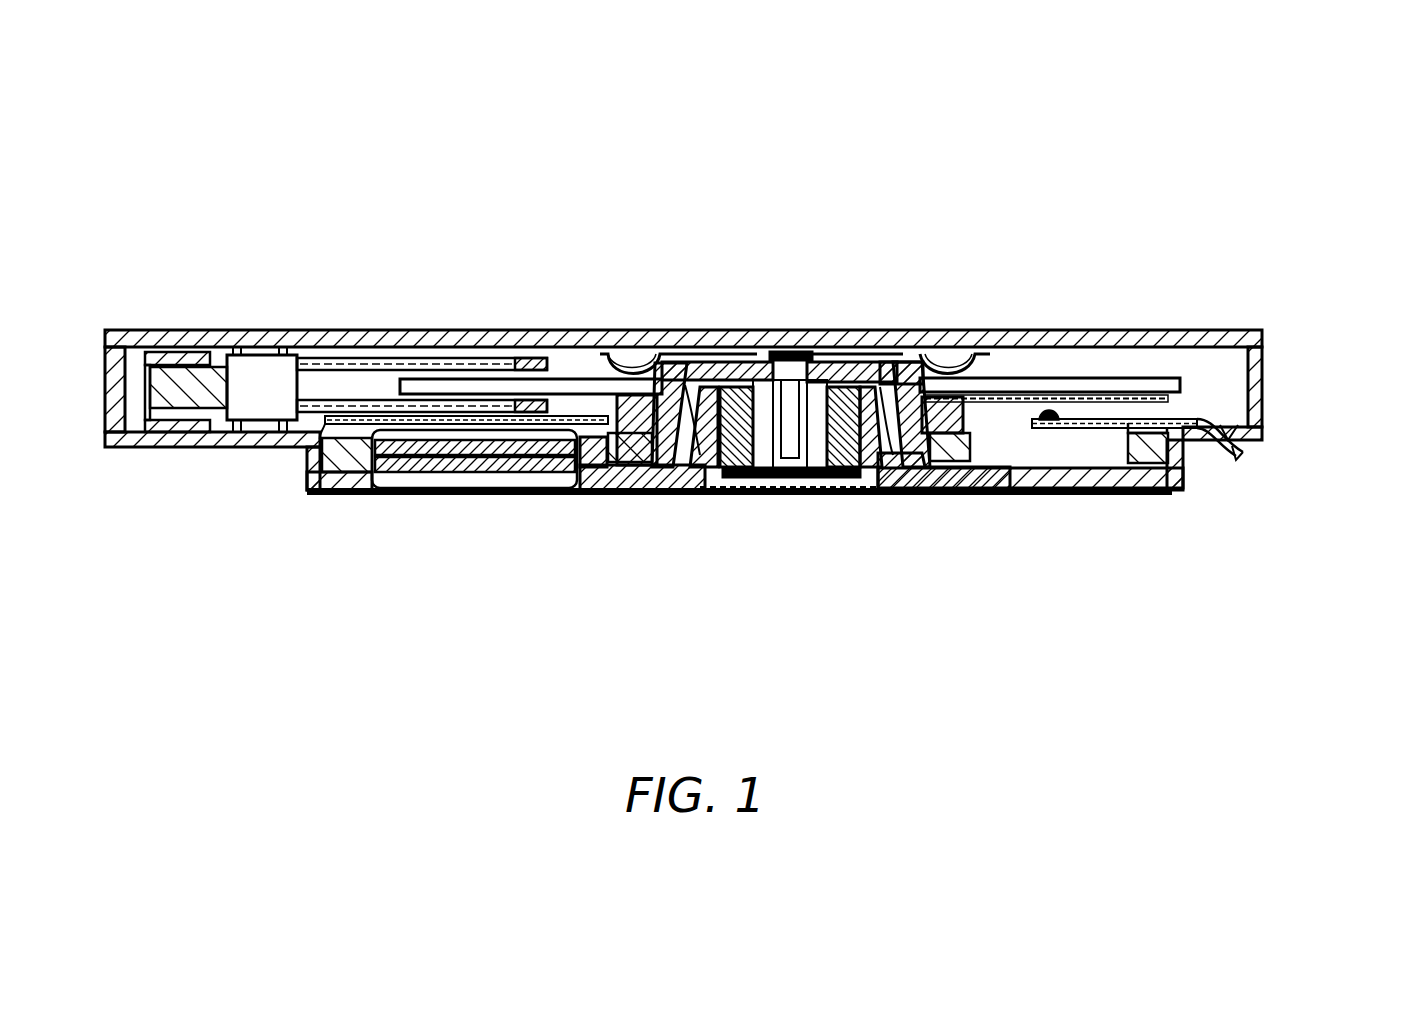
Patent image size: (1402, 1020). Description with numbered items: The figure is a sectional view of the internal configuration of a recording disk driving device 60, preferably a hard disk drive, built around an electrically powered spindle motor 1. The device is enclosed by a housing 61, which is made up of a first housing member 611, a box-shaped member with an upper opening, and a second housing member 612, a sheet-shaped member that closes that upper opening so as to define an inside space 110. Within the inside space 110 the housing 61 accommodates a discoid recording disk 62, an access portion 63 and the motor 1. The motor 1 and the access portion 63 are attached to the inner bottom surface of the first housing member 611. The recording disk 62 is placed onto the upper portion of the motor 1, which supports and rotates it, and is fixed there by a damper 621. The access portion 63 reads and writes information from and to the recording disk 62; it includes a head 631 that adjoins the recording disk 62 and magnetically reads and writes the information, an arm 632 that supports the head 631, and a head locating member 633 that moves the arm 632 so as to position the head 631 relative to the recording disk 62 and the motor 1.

The recording disk driving device 60 is at (140, 136).
The housing 61 is at (736, 418).
The first housing member 611 is at (1068, 480).
The second housing member 612 is at (1268, 338).
The inside space 110 is at (1213, 383).
The recording disk 62 is at (1050, 377).
The damper 621 is at (897, 355).
The spindle motor 1 is at (842, 368).
The access portion 63 is at (391, 432).
The head 631 is at (548, 374).
The arm 632 is at (397, 357).
The head locating member 633 is at (258, 393).